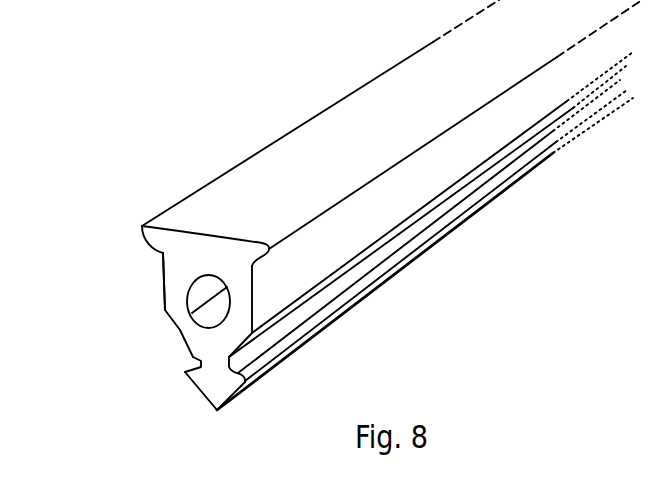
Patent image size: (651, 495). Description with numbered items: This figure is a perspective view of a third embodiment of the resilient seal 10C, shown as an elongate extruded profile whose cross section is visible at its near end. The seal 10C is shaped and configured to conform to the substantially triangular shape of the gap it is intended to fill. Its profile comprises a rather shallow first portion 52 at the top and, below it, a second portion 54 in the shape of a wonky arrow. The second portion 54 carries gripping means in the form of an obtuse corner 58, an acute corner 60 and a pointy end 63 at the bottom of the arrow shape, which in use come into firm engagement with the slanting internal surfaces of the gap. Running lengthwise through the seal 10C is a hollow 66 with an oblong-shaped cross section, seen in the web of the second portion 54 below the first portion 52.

The resilient seal 10C is at (300, 98).
The first portion 52 is at (131, 228).
The second portion 54 is at (131, 287).
The obtuse corner 58 is at (162, 309).
The acute corner 60 is at (186, 371).
The tip 63 is at (216, 412).
The hollow 66 is at (215, 318).